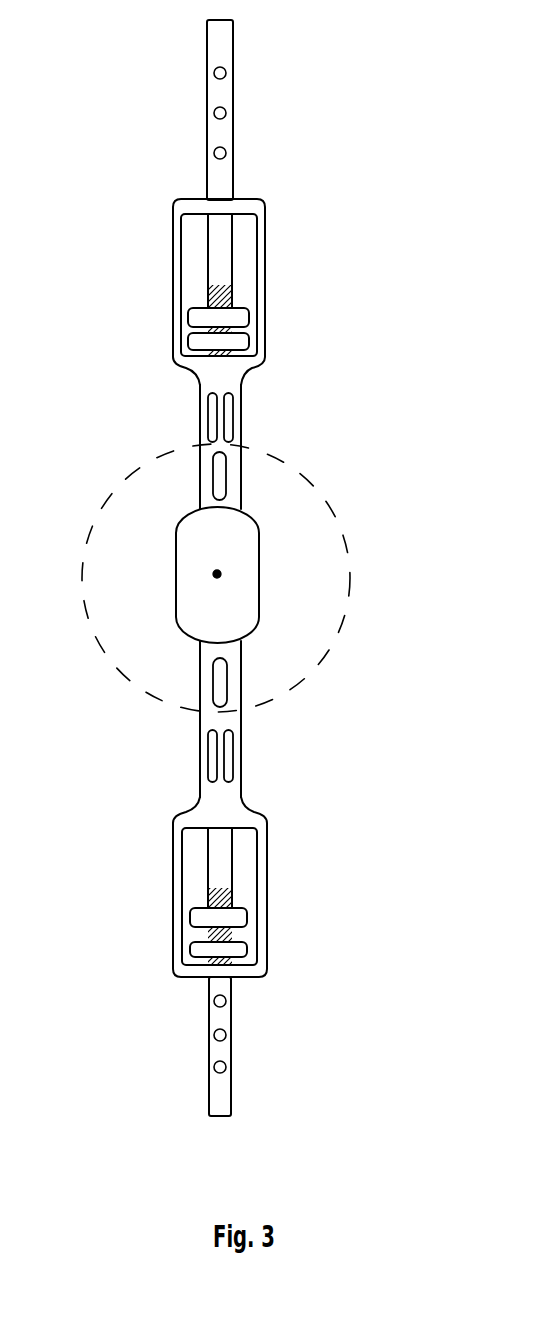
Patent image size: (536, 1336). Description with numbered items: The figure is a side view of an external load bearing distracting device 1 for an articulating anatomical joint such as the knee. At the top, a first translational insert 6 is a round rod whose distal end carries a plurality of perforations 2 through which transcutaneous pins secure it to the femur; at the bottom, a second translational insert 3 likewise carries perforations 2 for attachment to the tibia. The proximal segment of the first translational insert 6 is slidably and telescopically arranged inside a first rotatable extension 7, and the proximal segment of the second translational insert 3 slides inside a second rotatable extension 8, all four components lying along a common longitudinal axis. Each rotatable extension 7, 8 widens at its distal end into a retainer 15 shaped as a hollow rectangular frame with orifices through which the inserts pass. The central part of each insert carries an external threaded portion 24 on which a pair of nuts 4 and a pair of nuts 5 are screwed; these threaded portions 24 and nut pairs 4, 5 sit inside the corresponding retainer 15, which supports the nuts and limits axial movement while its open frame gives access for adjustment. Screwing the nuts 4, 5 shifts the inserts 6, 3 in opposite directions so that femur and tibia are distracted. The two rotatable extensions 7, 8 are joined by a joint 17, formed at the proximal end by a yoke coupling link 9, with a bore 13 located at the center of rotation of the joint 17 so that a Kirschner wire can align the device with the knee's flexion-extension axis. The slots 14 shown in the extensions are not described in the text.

The external load bearing distracting device 1 is at (320, 147).
The perforations 2 is at (207, 72).
The second translational insert 3 is at (227, 1017).
The pair of nuts 4 is at (193, 342).
The pair of nuts 5 is at (243, 915).
The first translational insert 6 is at (223, 249).
The first rotatable extension 7 is at (205, 493).
The second rotatable extension 8 is at (225, 722).
The coupling link 9 is at (247, 583).
The bore 13 is at (216, 577).
The slots 14 is at (200, 430).
The retainer 15 is at (173, 243).
The joint 17 is at (333, 509).
The external threaded portion 24 is at (210, 288).